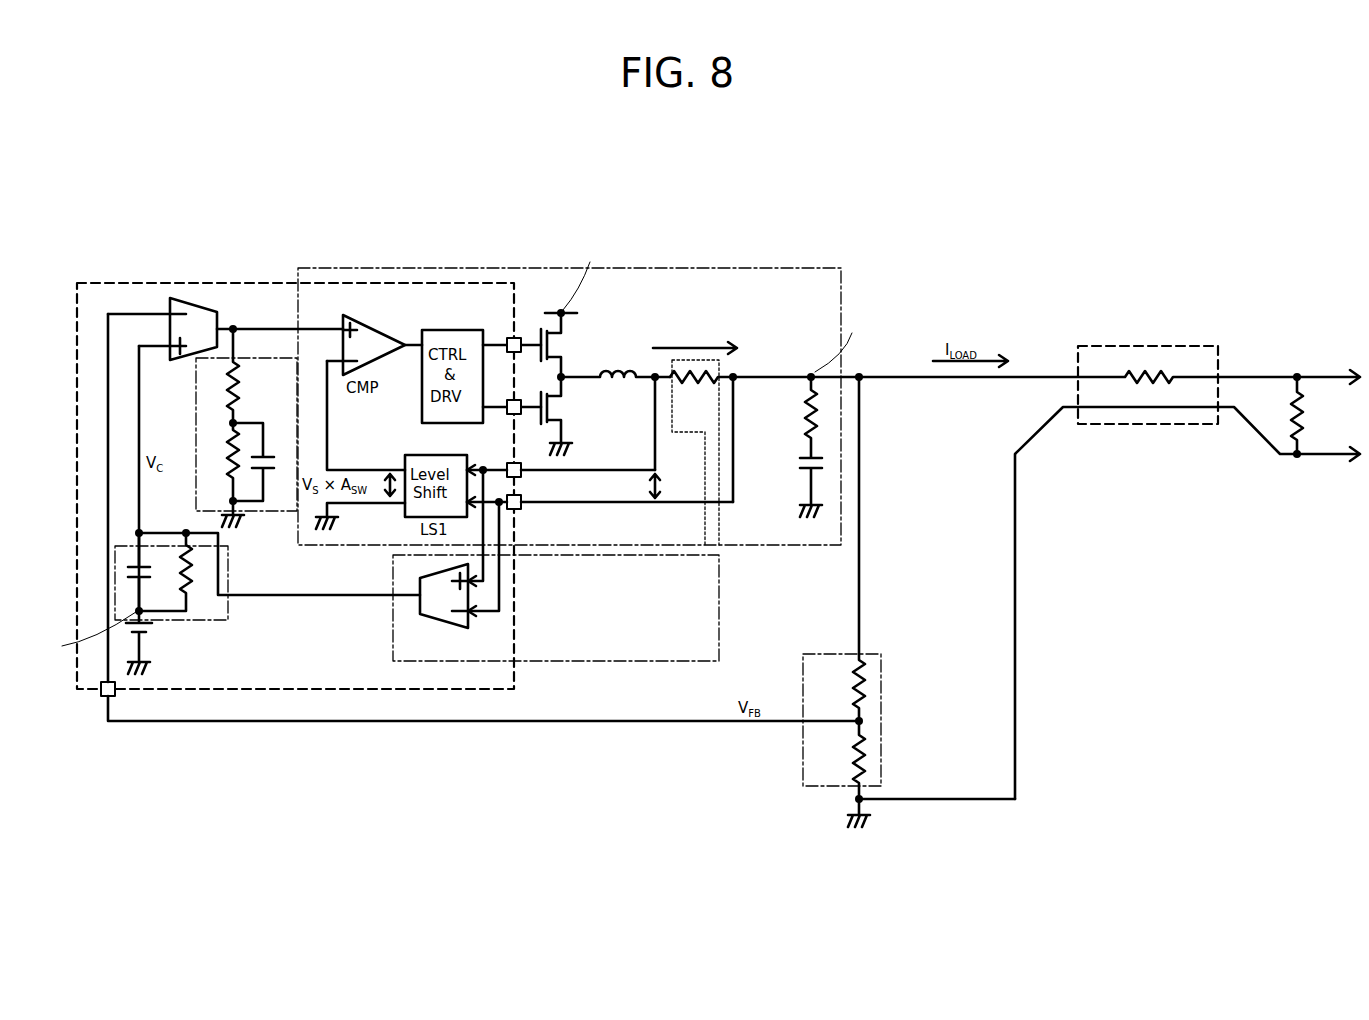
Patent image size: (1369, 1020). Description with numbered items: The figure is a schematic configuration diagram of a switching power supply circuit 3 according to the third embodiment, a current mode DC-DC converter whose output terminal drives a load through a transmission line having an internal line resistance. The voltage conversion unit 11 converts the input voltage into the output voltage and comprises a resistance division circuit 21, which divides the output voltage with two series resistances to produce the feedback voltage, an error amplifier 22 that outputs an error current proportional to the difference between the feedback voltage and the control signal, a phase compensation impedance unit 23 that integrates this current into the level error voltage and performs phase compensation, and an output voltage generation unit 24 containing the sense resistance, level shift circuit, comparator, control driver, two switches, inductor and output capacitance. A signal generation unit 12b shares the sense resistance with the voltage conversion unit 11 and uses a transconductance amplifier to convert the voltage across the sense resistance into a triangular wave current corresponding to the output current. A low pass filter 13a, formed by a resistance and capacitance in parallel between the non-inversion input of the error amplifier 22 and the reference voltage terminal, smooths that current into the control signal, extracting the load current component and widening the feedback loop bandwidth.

The switching power supply circuit 3 is at (1150, 189).
The voltage conversion unit 11 is at (764, 236).
The signal generation unit 12b is at (720, 627).
The low pass filter 13a is at (228, 612).
The resistance division circuit 21 is at (803, 770).
The error amplifier 22 is at (196, 303).
The phase compensation impedance unit 23 is at (296, 512).
The output voltage generation unit 24 is at (841, 280).